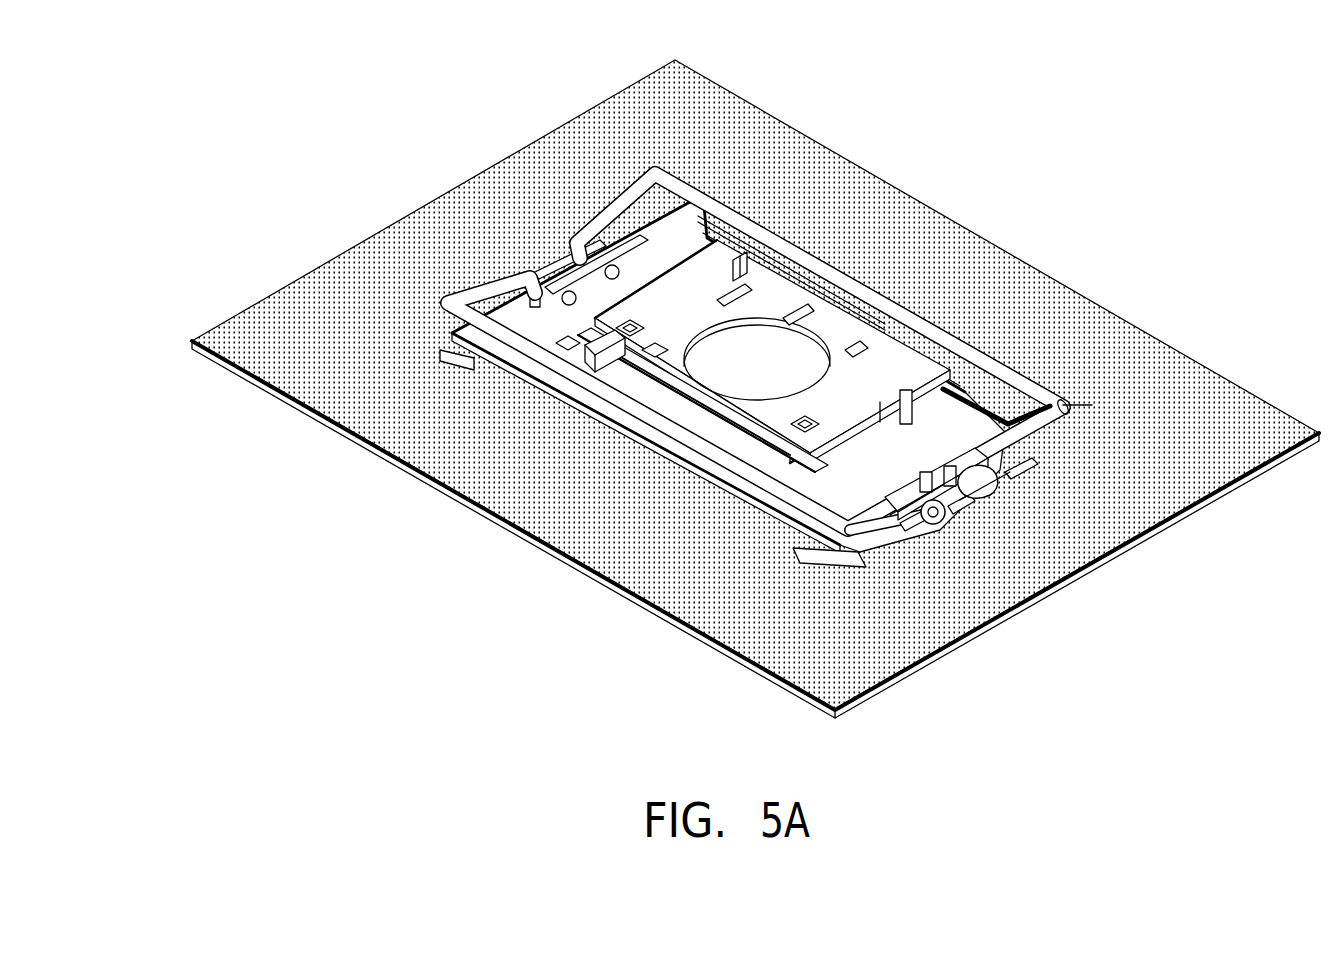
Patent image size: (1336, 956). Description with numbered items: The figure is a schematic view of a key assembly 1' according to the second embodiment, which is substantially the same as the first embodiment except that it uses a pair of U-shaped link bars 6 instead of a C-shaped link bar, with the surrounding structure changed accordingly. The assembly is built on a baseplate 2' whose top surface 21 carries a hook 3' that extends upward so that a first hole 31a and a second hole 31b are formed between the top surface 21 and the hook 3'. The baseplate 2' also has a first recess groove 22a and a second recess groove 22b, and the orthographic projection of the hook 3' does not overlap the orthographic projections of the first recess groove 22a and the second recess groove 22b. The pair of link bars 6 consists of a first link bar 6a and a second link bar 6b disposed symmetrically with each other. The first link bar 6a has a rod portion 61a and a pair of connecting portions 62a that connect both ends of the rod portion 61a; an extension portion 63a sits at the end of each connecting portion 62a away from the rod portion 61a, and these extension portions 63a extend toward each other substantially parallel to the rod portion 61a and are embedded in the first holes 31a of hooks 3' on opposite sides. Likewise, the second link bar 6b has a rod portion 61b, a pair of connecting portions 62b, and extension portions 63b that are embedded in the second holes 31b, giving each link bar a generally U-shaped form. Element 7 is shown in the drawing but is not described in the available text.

The key assembly 1' is at (752, 301).
The baseplate 2' is at (727, 516).
The top surface 21 is at (238, 368).
The adhesive layer 7 is at (304, 292).
The hook 3' is at (814, 351).
The first hole 31a is at (927, 487).
The second hole 31b is at (947, 483).
The first recess groove 22a is at (950, 517).
The second recess groove 22b is at (1017, 477).
The pair of link bars 6 is at (115, 58).
The first link bar 6a is at (1034, 709).
The second link bar 6b is at (1289, 536).
The rod portion 61a is at (845, 535).
The connecting portions 62a is at (915, 524).
The extension portion 63a is at (945, 525).
The rod portion 61b is at (1068, 412).
The connecting portions 62b is at (1035, 443).
The extension portion 63b is at (1025, 462).